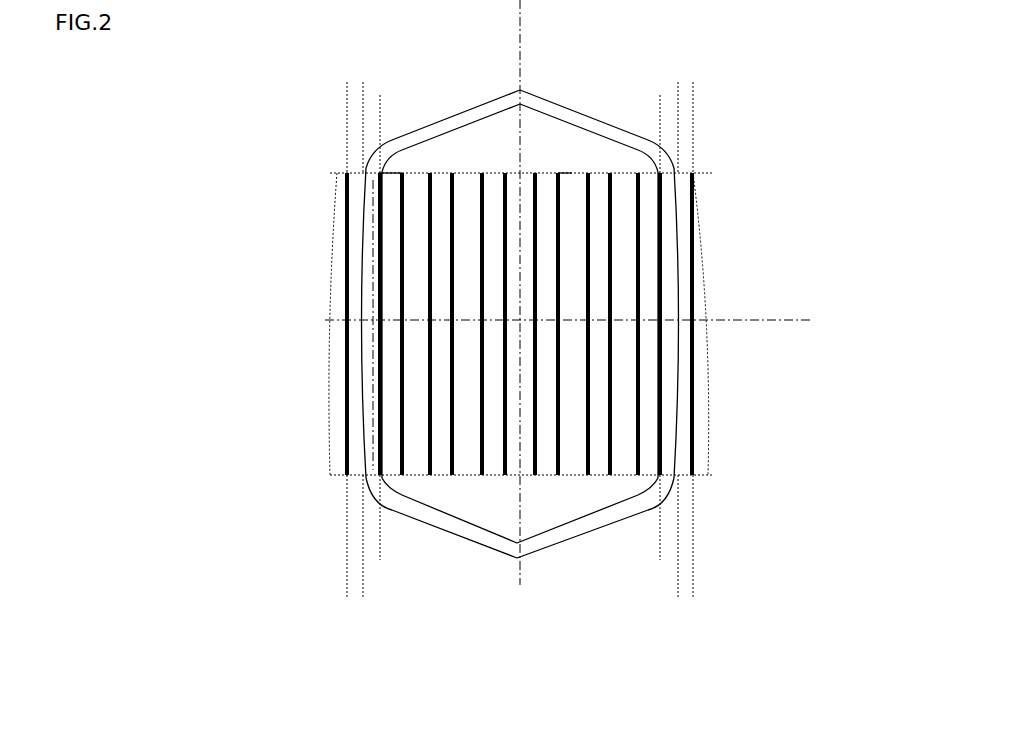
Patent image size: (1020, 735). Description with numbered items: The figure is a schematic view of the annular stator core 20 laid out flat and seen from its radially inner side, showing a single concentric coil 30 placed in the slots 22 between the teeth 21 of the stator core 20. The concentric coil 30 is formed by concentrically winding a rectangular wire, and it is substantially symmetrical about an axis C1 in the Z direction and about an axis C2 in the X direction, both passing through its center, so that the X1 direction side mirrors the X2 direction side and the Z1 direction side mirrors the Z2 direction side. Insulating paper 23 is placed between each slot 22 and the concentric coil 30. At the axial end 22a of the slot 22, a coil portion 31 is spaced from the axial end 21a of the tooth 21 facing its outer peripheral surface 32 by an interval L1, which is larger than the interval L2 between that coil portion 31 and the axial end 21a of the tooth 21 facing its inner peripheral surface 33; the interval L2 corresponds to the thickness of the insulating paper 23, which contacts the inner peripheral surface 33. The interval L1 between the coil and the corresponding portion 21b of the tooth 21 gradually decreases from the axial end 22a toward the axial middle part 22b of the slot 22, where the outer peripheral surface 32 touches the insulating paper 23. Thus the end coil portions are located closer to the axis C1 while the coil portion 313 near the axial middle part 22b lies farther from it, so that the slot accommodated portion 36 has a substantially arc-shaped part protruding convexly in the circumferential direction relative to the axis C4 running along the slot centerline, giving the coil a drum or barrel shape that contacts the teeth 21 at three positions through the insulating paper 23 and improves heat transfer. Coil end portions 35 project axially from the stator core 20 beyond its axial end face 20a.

The stator core 20 is at (700, 232).
The axial end face 20a is at (568, 174).
The tooth 21 is at (447, 476).
The axial end of the tooth 21a is at (347, 172).
The corresponding portion of the tooth 21b is at (345, 204).
The slot 22 is at (345, 188).
The axial end of the slot 22a is at (347, 170).
The axial middle part of the slot 22b is at (352, 322).
The insulating paper 23 is at (408, 268).
The concentric coil 30 is at (558, 97).
The coil portion 31 is at (358, 157).
The outer peripheral surface 32 is at (484, 100).
The inner peripheral surface 33 is at (497, 114).
The coil end portion 35 is at (456, 114).
The slot accommodated portion 36 is at (358, 272).
The coil portion 313 is at (352, 322).
The axis C1 is at (524, 30).
The axis C2 is at (738, 320).
The axis C4 is at (362, 418).
The interval L1 is at (378, 93).
The interval L2 is at (350, 115).
The X direction X is at (575, 608).
The X1 direction X1 is at (515, 643).
The X2 direction X2 is at (575, 643).
The Z direction Z is at (830, 238).
The Z1 direction Z1 is at (867, 240).
The Z2 direction Z2 is at (867, 360).